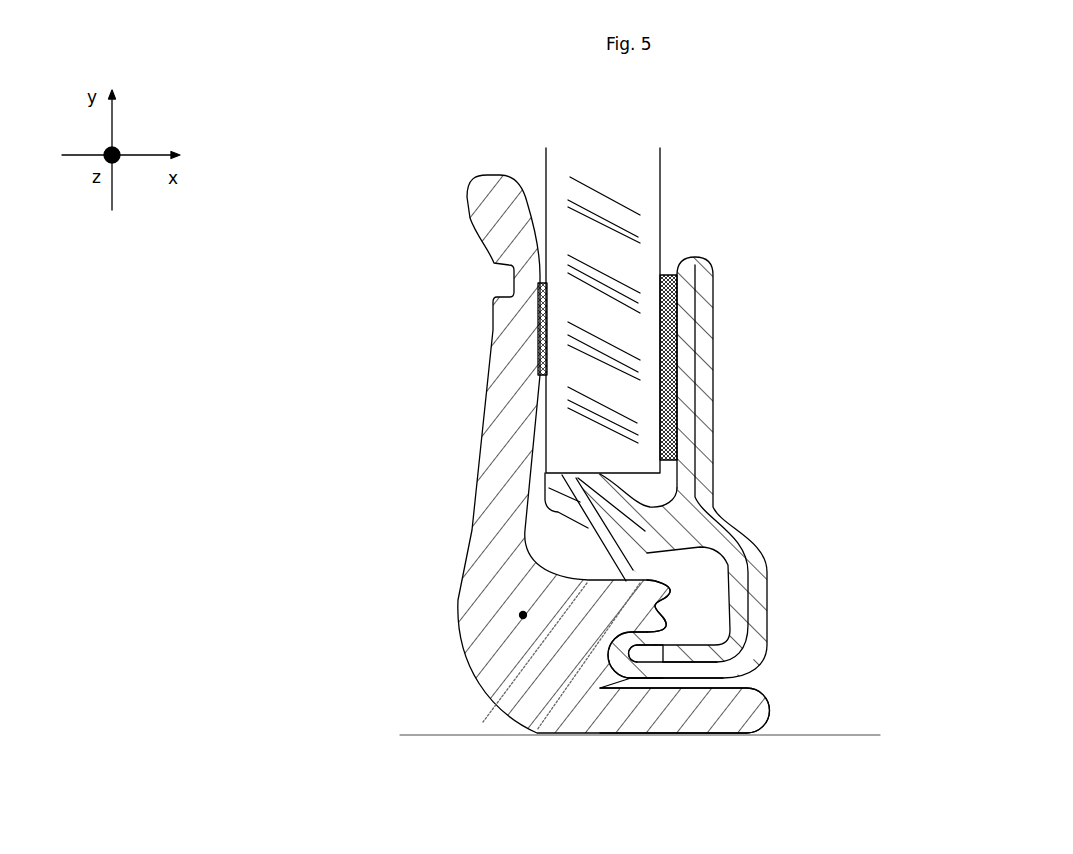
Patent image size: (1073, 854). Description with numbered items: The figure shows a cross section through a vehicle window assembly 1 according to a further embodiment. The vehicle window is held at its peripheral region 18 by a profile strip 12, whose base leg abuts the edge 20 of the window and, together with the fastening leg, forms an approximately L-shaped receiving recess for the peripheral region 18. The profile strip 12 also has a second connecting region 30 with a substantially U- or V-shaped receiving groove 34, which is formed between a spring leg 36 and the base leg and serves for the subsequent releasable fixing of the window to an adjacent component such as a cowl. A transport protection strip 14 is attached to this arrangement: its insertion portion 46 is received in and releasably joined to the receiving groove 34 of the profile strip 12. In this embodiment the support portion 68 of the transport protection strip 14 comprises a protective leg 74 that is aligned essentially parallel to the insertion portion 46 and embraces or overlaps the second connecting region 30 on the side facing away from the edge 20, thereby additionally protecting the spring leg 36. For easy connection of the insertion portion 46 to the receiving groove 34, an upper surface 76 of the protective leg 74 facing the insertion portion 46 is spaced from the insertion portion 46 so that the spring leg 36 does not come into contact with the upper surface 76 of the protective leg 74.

The vehicle window assembly 1 is at (420, 165).
The profile strip 12 is at (941, 600).
The transport protection strip 14 is at (405, 667).
The peripheral region 18 is at (612, 247).
The edge 20 is at (596, 477).
The second connecting region 30 is at (836, 534).
The receiving groove 34 is at (711, 607).
The spring leg 36 is at (682, 673).
The insertion portion 46 is at (616, 620).
The support portion 68 is at (551, 713).
The protective leg 74 is at (723, 705).
The upper surface 76 is at (722, 688).